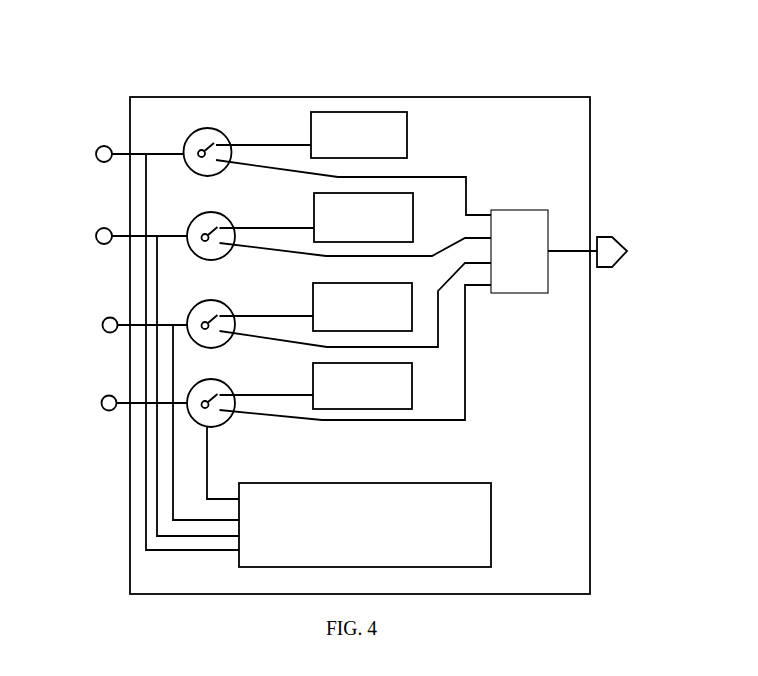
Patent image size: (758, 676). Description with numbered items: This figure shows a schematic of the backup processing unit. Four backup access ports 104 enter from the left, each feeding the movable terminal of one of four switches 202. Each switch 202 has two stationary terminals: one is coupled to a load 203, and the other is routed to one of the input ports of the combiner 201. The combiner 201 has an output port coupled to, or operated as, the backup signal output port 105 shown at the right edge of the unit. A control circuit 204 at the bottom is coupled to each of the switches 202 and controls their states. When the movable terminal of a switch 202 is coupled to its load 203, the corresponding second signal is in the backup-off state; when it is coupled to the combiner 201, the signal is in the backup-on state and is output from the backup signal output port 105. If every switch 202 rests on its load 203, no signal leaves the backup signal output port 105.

The backup access port 104 is at (93, 157).
The backup signal output port 105 is at (610, 248).
The combiner 201 is at (500, 212).
The switch 202 is at (206, 130).
The load 203 is at (394, 132).
The control circuit 204 is at (460, 482).